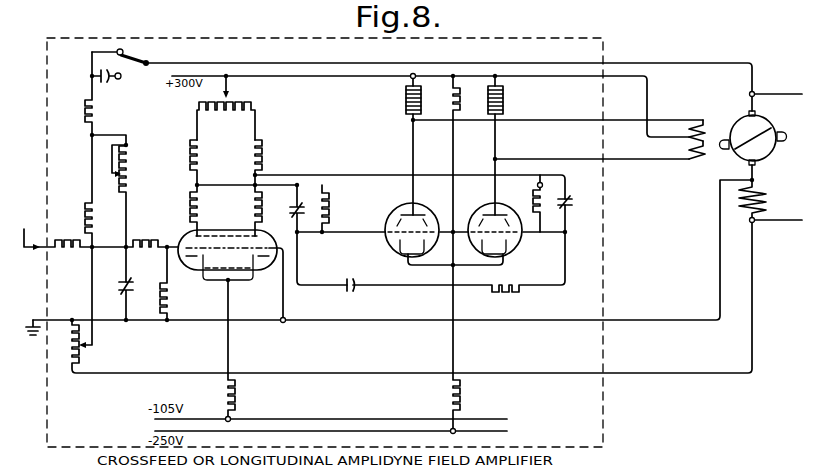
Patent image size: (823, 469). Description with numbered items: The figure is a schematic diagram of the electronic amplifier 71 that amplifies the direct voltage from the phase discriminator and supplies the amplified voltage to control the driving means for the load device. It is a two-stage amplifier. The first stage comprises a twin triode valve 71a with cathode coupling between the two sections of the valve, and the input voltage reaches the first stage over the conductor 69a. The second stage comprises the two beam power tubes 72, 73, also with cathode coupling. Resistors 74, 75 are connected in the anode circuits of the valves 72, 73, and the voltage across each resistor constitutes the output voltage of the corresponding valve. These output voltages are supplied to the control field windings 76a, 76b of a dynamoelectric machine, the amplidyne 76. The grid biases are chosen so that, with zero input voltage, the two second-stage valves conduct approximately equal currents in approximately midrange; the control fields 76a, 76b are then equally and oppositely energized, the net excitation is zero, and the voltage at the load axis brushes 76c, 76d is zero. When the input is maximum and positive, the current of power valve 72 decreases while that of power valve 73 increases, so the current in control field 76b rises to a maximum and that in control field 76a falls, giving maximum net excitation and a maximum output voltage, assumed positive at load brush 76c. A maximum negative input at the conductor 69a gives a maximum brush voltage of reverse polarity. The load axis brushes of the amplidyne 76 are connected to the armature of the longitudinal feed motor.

The conductor 69a is at (95, 230).
The electronic amplifier 71 is at (325, 233).
The twin triode valve 71a is at (237, 236).
The beam power tube 72 is at (394, 209).
The beam power tube 73 is at (516, 208).
The resistor 74 is at (406, 100).
The resistor 75 is at (503, 100).
The amplidyne 76 is at (766, 125).
The control field winding 76a is at (704, 125).
The control field winding 76b is at (702, 158).
The load axis brush 76c is at (750, 110).
The load axis brush 76d is at (757, 163).